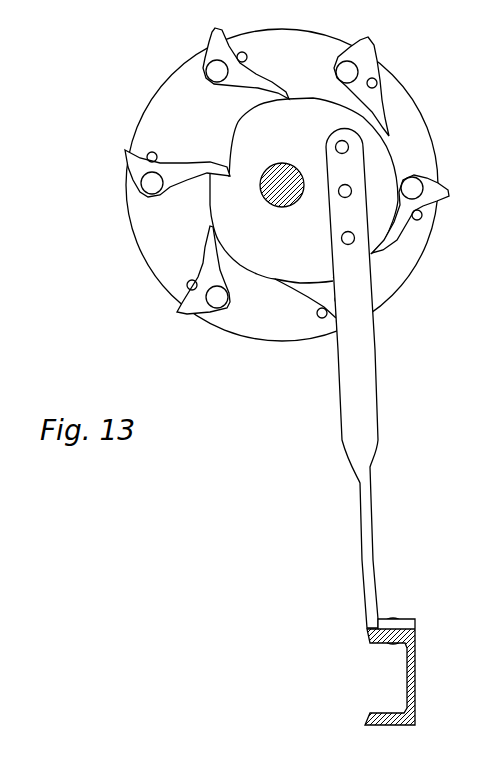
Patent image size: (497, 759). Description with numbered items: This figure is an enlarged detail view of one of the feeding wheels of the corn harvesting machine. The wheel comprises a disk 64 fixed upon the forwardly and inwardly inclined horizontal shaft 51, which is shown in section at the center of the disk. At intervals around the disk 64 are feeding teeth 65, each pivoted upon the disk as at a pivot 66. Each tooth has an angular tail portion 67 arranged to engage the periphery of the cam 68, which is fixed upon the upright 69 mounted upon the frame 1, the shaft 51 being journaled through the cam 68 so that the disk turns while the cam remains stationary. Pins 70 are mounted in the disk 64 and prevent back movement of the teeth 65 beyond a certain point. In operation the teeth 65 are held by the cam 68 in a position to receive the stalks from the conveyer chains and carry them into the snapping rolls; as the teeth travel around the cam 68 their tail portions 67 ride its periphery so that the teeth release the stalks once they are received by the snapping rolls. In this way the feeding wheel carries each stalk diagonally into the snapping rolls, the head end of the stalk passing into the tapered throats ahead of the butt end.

The frame 1 is at (415, 658).
The horizontal shaft 51 is at (283, 163).
The disk 64 is at (150, 107).
The feeding teeth 65 is at (211, 33).
The pivot 66 is at (337, 68).
The angular tail portion 67 is at (275, 76).
The cam 68 is at (383, 163).
The upright 69 is at (371, 368).
The pins 70 is at (243, 56).